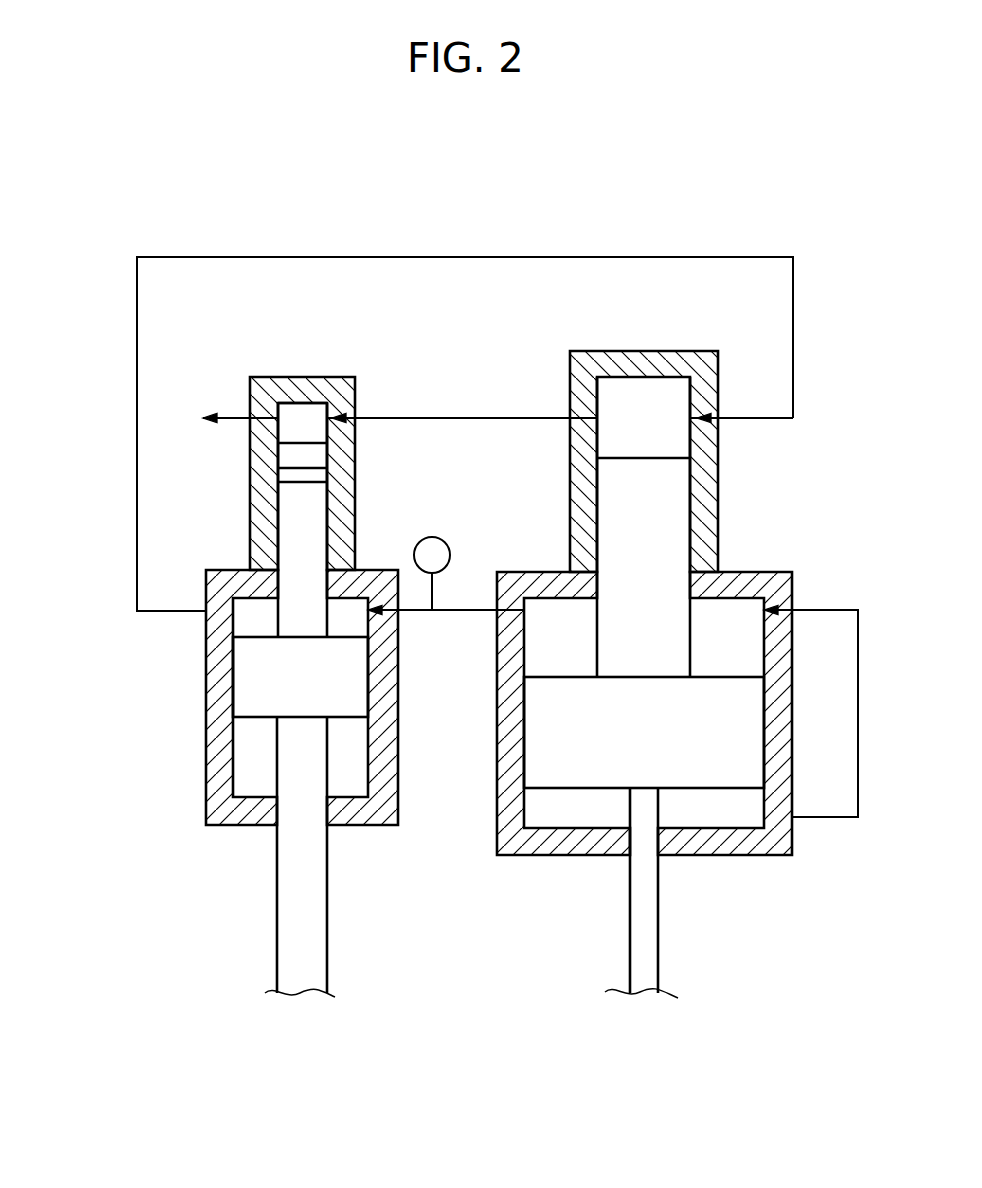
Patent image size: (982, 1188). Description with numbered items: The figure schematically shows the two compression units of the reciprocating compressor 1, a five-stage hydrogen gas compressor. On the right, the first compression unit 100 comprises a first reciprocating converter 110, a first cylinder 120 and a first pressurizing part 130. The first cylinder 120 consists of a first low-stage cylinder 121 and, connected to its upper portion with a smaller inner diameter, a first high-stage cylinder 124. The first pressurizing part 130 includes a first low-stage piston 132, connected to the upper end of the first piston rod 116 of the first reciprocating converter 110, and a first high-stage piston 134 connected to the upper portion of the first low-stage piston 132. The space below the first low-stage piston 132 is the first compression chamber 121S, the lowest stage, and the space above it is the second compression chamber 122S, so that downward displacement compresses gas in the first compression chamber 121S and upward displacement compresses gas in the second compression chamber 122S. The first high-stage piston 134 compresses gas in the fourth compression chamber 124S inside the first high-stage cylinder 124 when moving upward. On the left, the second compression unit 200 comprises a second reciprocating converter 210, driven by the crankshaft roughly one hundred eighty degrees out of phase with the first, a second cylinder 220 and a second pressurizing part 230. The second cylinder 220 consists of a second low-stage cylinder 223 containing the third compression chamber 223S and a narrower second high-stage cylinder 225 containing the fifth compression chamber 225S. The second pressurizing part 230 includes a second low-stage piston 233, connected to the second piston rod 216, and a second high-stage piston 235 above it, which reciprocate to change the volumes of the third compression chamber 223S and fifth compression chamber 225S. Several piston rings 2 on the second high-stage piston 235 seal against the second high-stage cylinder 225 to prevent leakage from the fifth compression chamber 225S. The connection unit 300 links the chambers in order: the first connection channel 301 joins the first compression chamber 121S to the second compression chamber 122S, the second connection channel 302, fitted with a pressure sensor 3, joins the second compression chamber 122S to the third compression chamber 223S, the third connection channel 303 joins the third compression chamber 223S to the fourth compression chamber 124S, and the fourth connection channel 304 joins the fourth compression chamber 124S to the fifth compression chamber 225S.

The reciprocating compressor 1 is at (844, 217).
The piston ring 2 is at (303, 488).
The pressure sensor 3 is at (452, 552).
The first compression unit 100 is at (691, 632).
The first reciprocating converter 110 is at (645, 968).
The first piston rod 116 is at (712, 893).
The first cylinder 120 is at (693, 600).
The first low-stage cylinder 121 is at (748, 582).
The first compression chamber 121S is at (720, 812).
The second compression chamber 122S is at (555, 607).
The first high-stage cylinder 124 is at (712, 455).
The fourth compression chamber 124S is at (652, 388).
The first pressurizing part 130 is at (628, 666).
The first low-stage piston 132 is at (625, 757).
The first high-stage piston 134 is at (637, 645).
The second compression unit 200 is at (279, 646).
The second reciprocating converter 210 is at (330, 700).
The second piston rod 216 is at (330, 700).
The second cylinder 220 is at (345, 570).
The second low-stage cylinder 223 is at (373, 582).
The third compression chamber 223S is at (247, 603).
The second high-stage cylinder 225 is at (348, 451).
The fifth compression chamber 225S is at (302, 416).
The second pressurizing part 230 is at (203, 672).
The second low-stage piston 233 is at (268, 683).
The second high-stage piston 235 is at (287, 615).
The connection unit 300 is at (501, 524).
The first connection channel 301 is at (835, 820).
The second connection channel 302 is at (457, 612).
The third connection channel 303 is at (487, 258).
The fourth connection channel 304 is at (448, 417).